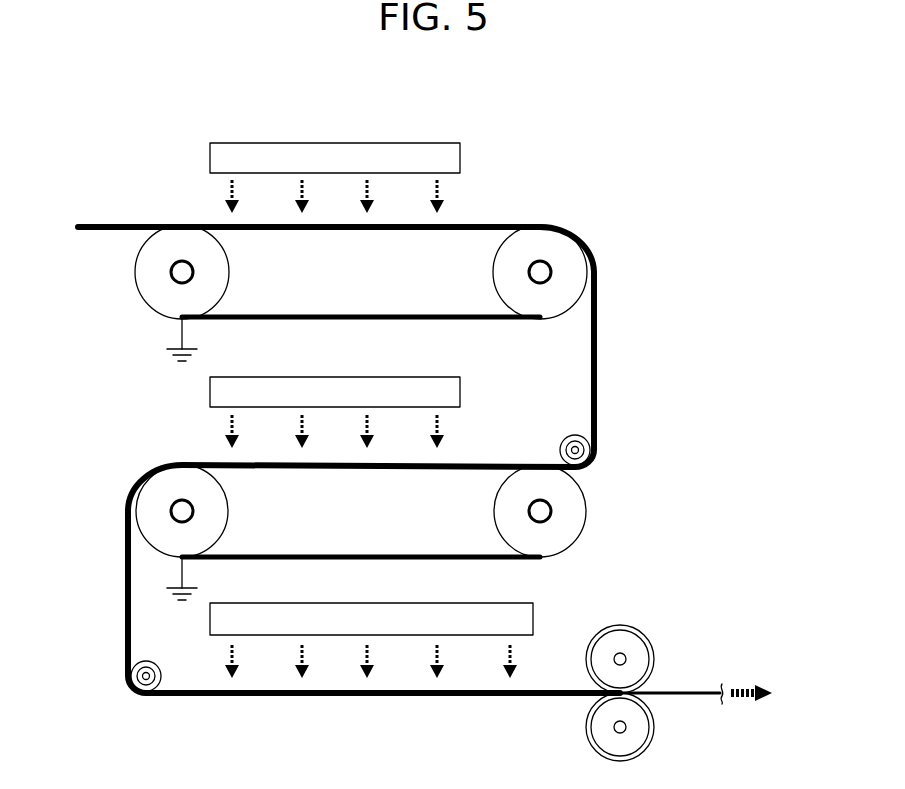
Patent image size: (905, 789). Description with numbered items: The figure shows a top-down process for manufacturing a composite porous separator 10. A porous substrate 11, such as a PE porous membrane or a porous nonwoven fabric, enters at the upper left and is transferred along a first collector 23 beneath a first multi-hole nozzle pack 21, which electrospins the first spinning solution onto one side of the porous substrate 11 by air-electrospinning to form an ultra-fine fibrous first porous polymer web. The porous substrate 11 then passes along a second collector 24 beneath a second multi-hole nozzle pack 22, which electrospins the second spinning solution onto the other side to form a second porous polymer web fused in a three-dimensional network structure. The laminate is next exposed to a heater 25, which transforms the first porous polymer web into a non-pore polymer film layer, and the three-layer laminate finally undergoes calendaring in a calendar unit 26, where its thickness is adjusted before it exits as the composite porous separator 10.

The composite porous separator 10 is at (693, 690).
The porous substrate 11 is at (108, 226).
The first multi-hole nozzle pack 21 is at (461, 152).
The second multi-hole nozzle pack 22 is at (461, 387).
The first collector 23 is at (440, 316).
The second collector 24 is at (440, 555).
The heater 25 is at (535, 606).
The calendar unit 26 is at (655, 614).